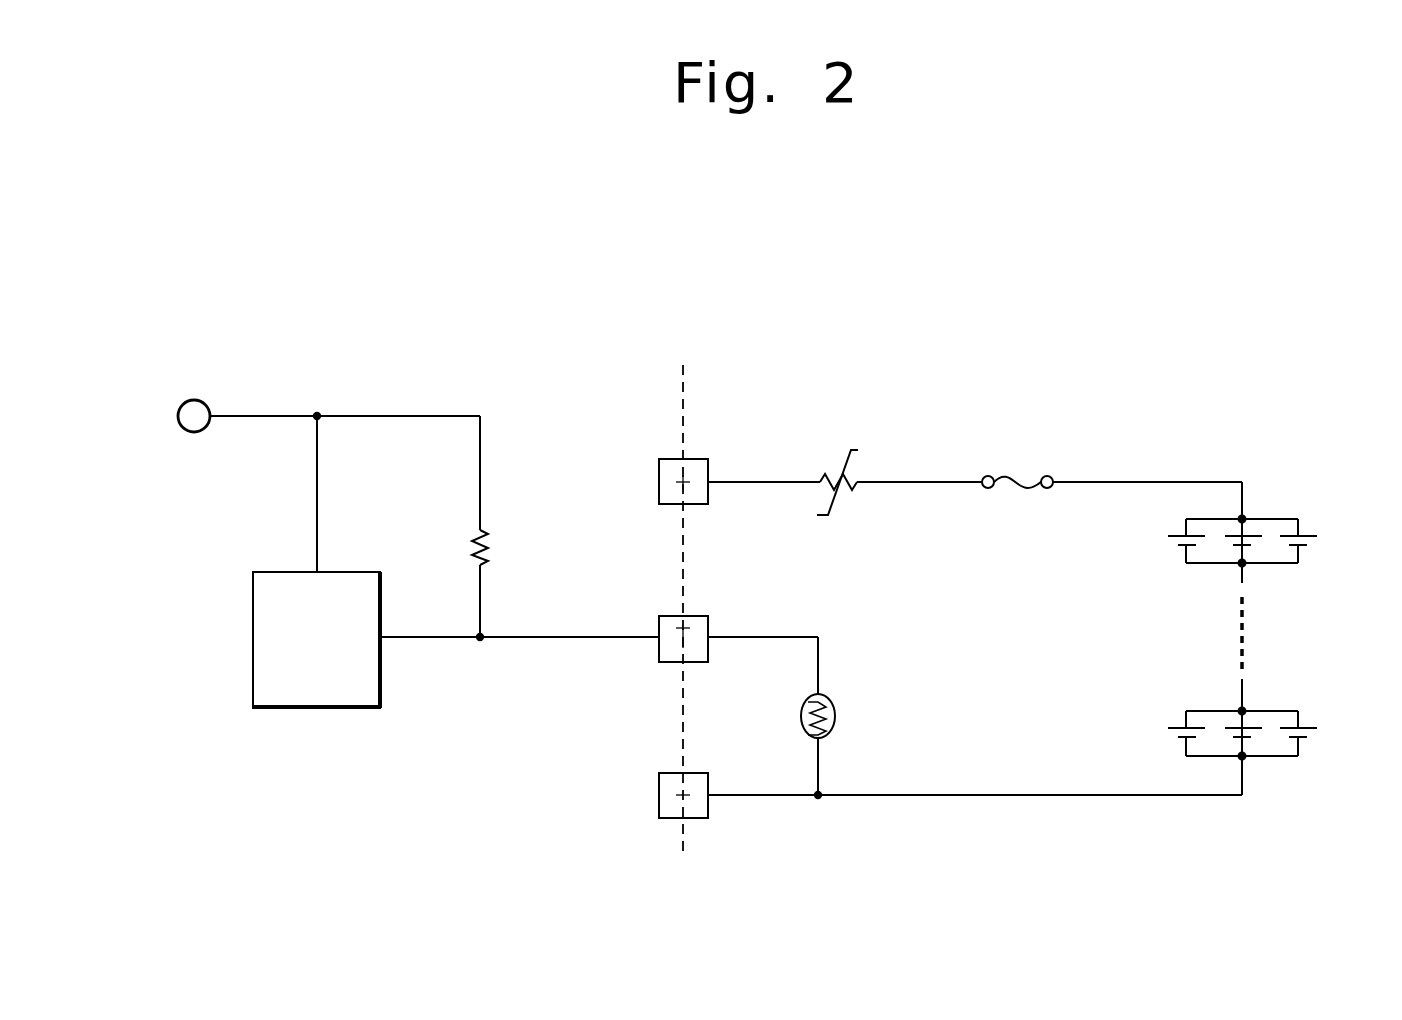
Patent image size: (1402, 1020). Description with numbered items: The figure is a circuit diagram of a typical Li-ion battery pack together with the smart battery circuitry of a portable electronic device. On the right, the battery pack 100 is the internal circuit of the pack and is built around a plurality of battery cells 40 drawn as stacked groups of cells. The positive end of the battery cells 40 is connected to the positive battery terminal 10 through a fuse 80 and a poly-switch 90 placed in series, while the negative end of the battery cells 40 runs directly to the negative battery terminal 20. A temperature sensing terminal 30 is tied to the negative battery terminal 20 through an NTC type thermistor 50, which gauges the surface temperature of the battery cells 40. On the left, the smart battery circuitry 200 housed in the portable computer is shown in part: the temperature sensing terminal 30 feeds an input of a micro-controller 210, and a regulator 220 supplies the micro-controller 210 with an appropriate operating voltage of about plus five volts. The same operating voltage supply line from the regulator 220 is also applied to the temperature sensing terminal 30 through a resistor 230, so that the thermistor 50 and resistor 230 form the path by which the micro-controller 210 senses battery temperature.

The positive battery terminal 10 is at (659, 482).
The negative battery terminal 20 is at (659, 793).
The temperature sensing terminal 30 is at (659, 617).
The battery cells 40 is at (1341, 518).
The NTC type thermistor 50 is at (838, 712).
The fuse 80 is at (1010, 476).
The poly-switch 90 is at (847, 480).
The battery pack 100 is at (1282, 584).
The smart battery circuitry 200 is at (410, 392).
The micro-controller 210 is at (326, 709).
The regulator 220 is at (210, 405).
The resistor 230 is at (484, 533).